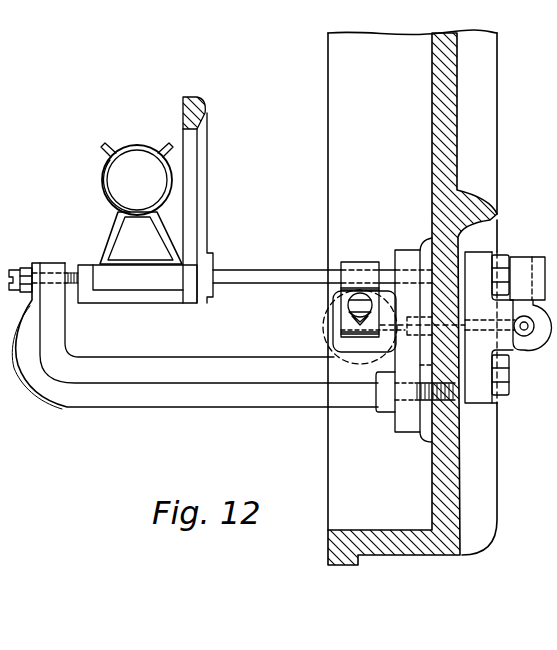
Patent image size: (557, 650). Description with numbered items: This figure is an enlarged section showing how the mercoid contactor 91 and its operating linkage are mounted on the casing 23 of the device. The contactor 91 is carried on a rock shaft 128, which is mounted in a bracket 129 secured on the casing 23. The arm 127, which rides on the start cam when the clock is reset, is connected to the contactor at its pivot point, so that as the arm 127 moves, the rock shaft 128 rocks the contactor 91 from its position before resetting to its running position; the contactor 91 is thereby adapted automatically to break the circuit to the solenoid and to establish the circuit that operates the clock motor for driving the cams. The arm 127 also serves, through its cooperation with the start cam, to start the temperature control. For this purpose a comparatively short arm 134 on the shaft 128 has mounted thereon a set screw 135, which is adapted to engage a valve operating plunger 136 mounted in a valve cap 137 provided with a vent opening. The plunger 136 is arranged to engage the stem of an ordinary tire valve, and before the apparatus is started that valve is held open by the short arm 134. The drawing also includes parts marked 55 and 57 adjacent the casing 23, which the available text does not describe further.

The casing 23 is at (430, 545).
The bracket lug 55 is at (521, 327).
The bracket block 57 is at (522, 262).
The contactor 91 is at (110, 197).
The arm 127 is at (198, 188).
The rock shaft 128 is at (254, 272).
The bracket 129 is at (200, 400).
The short arm 134 is at (346, 309).
The set screw 135 is at (359, 292).
The valve operating plunger 136 is at (323, 337).
The valve cap 137 is at (346, 304).